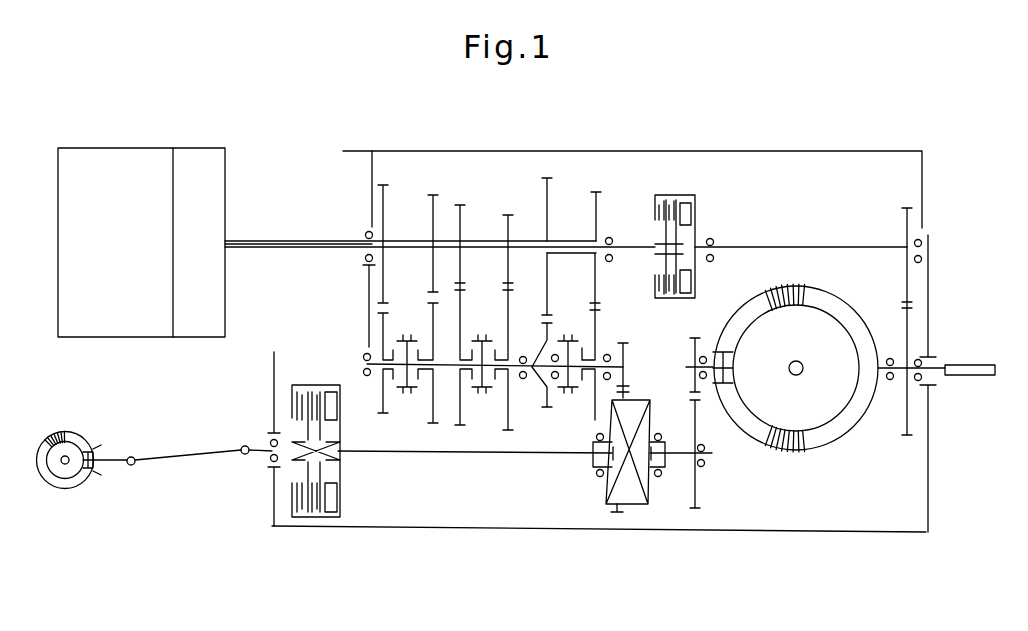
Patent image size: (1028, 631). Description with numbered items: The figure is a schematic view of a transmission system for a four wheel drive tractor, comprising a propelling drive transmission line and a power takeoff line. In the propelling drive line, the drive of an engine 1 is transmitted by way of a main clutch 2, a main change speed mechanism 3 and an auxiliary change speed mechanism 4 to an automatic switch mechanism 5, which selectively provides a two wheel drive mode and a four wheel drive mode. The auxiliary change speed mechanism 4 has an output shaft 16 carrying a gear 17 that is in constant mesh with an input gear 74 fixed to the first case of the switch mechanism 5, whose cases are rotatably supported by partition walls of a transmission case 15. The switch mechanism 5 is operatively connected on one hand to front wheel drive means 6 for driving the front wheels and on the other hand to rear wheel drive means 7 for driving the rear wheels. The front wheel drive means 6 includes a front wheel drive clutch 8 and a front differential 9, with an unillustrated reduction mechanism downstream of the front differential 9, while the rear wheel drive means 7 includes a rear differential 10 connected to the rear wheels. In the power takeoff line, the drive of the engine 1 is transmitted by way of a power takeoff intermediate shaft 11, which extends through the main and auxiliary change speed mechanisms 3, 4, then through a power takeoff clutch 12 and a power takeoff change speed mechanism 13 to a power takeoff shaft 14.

The engine 1 is at (108, 150).
The main clutch 2 is at (197, 160).
The main change speed mechanism 3 is at (485, 185).
The auxiliary change speed mechanism 4 is at (600, 182).
The automatic switch mechanism 5 is at (637, 512).
The front wheel drive means 6 is at (233, 478).
The rear wheel drive means 7 is at (748, 487).
The front wheel drive clutch 8 is at (313, 519).
The front differential 9 is at (59, 500).
The rear differential 10 is at (711, 333).
The power takeoff intermediate shaft 11 is at (634, 247).
The power takeoff clutch 12 is at (700, 194).
The power takeoff change speed mechanism 13 is at (907, 287).
The power takeoff shaft 14 is at (987, 365).
The transmission case 15 is at (698, 532).
The output shaft 16 is at (600, 364).
The gear 17 is at (628, 357).
The input gear 74 is at (630, 392).